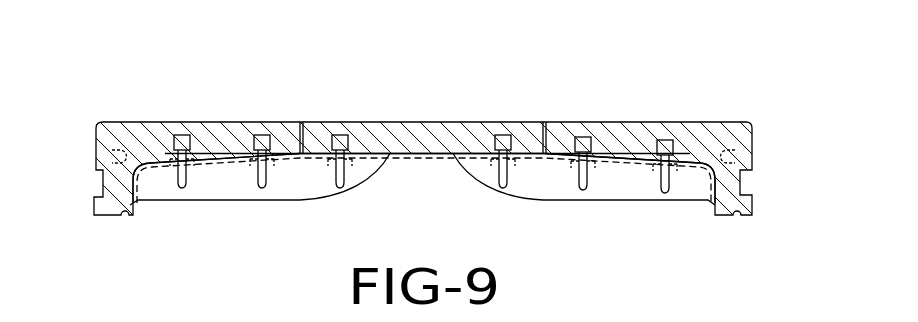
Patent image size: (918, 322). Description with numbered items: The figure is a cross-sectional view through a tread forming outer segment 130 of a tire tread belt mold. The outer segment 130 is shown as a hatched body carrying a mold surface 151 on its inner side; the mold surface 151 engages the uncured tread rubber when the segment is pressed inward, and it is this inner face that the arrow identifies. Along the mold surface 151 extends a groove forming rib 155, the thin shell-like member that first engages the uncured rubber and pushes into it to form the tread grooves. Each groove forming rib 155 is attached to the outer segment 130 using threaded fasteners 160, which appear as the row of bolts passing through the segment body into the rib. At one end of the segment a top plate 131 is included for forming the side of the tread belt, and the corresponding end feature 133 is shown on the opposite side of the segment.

The tread forming outer segment 130 is at (700, 133).
The top plate 131 is at (752, 205).
The left side rail 133 is at (97, 143).
The threaded fastener 160 is at (168, 138).
The groove forming rib 155 is at (277, 192).
The mold surface 151 is at (436, 176).